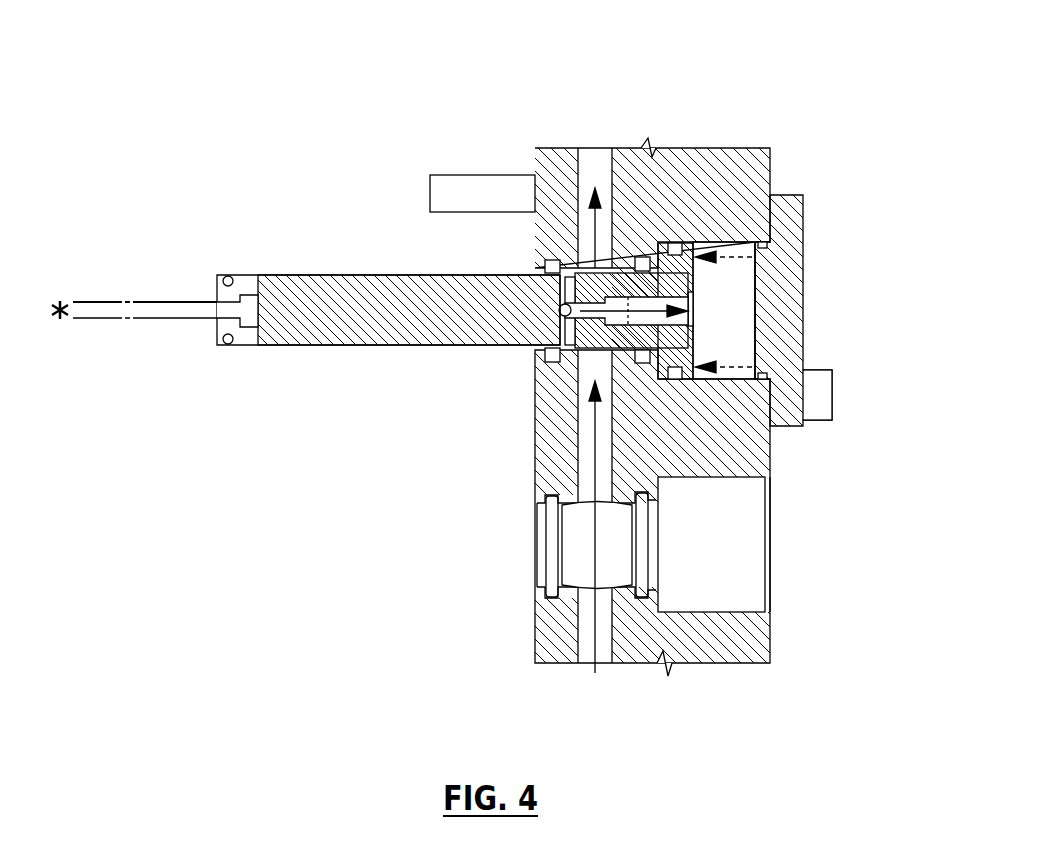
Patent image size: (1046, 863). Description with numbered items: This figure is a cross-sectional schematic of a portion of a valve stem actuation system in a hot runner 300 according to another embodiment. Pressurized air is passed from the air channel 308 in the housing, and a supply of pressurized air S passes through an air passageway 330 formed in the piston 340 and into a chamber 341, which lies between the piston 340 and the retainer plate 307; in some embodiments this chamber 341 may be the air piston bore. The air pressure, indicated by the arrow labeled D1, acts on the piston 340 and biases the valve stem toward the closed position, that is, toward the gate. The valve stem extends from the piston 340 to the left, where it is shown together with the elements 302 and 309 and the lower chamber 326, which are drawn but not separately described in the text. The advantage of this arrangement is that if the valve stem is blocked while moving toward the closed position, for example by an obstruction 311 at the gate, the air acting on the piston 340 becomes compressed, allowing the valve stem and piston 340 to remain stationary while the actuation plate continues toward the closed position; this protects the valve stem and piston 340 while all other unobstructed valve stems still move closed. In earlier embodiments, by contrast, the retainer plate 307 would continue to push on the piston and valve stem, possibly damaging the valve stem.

The hot runner 300 is at (762, 70).
The actuator stem 302 is at (195, 308).
The retainer plate 307 is at (788, 288).
The air channel 308 is at (585, 442).
The seal 309 is at (545, 268).
The obstruction 311 is at (62, 300).
The outlet chamber 326 is at (717, 597).
The air passageway 330 is at (617, 320).
The piston 340 is at (676, 265).
The chamber 341 is at (733, 312).
The air pressure D1 is at (757, 252).
The supply of pressurized air S is at (594, 445).